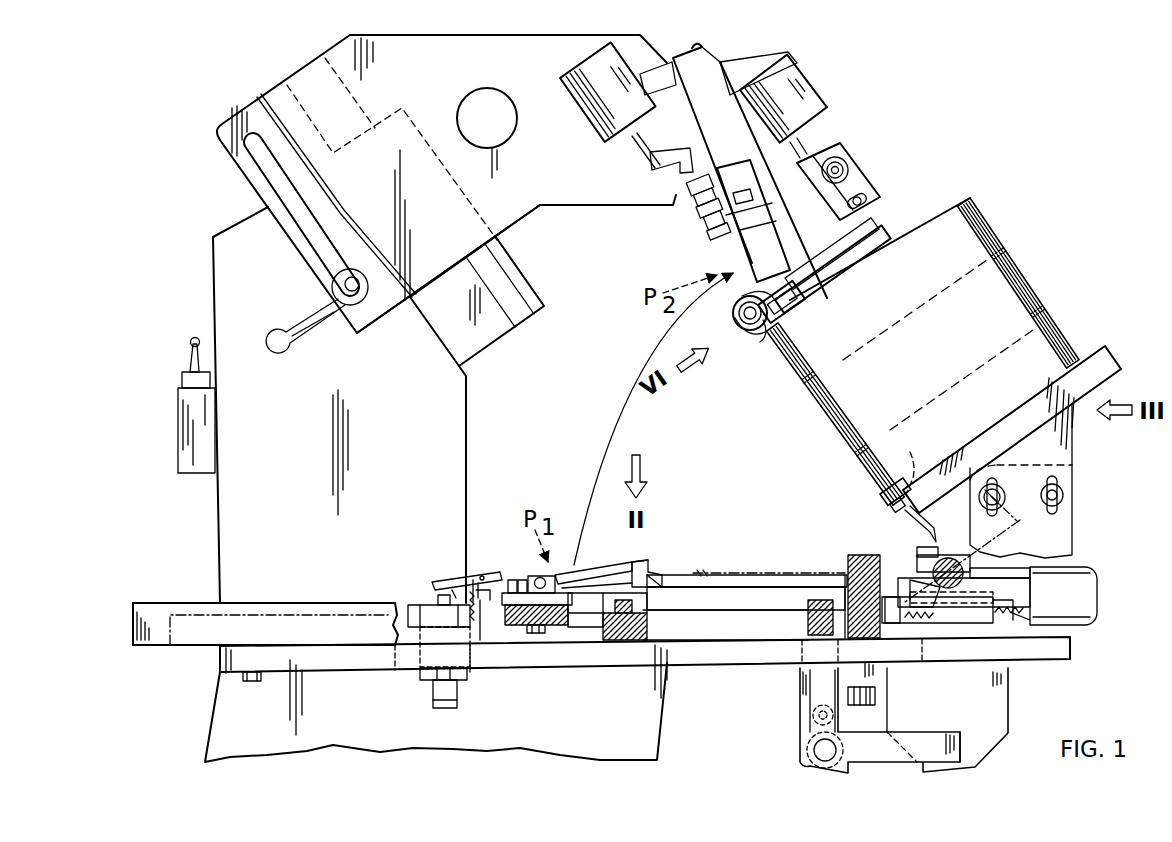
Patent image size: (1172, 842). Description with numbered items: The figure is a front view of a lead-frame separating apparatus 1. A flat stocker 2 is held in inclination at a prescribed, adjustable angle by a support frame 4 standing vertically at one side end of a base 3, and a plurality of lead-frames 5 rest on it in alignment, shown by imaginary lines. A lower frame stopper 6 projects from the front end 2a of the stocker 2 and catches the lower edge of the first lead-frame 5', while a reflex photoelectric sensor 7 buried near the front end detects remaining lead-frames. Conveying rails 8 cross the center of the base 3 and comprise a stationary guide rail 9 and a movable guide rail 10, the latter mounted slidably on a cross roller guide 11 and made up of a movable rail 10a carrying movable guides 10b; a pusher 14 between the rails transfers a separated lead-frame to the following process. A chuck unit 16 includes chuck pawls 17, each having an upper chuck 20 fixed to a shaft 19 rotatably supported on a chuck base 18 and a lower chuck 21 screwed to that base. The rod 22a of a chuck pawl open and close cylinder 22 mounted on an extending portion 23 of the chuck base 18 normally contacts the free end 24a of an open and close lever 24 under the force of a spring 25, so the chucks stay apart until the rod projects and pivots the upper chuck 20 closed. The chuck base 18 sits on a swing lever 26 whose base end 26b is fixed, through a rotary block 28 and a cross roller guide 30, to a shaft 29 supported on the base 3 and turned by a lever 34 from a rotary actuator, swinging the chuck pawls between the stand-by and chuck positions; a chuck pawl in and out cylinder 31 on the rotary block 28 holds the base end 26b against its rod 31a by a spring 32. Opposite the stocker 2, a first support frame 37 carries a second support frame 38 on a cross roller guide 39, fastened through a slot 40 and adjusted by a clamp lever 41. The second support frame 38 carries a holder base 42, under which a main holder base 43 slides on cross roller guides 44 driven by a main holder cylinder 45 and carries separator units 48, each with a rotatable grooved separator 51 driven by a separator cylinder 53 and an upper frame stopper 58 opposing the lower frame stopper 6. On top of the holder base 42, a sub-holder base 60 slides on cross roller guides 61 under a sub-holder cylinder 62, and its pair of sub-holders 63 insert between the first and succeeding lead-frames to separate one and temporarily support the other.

The lead-frame separating apparatus 1 is at (945, 101).
The stocker 2 is at (1112, 358).
The front end of the stocker 2a is at (906, 512).
The base 3 is at (732, 653).
The support frame 4 is at (1075, 476).
The lead-frame 5 is at (887, 387).
The first lead-frame 5' is at (836, 414).
The lower frame stopper 6 is at (880, 496).
The reflex photoelectric sensor 7 is at (908, 461).
The conveying rails 8 is at (760, 553).
The stationary guide rail 9 is at (855, 558).
The movable guide rail 10 is at (670, 624).
The movable rail 10a is at (652, 625).
The movable guides 10b is at (645, 558).
The cross roller guide 11 is at (280, 640).
The pusher 14 is at (806, 617).
The chuck unit 16 is at (621, 556).
The chuck pawl 17 is at (596, 566).
The chuck base 18 is at (553, 624).
The shaft 19 is at (535, 567).
The upper chuck 20 is at (567, 569).
The lower chuck 21 is at (590, 590).
The chuck pawl open and close cylinder 22 is at (422, 633).
The rod 22a is at (433, 598).
The extending portion 23 is at (428, 605).
The open and close lever 24 is at (484, 571).
The free end 24a is at (455, 592).
The spring 25 is at (487, 612).
The swing lever 26 is at (767, 593).
The base end of the swing lever 26b is at (958, 624).
The rotary block 28 is at (1035, 572).
The shaft 29 is at (930, 575).
The cross roller guide 30 is at (953, 598).
The chuck pawl in and out cylinder 31 is at (1013, 605).
The rod 31a is at (1053, 622).
The spring 32 is at (1005, 624).
The lever 34 is at (1050, 535).
The first support frame 37 is at (223, 512).
The second support frame 38 is at (533, 207).
The cross roller guide 39 is at (388, 297).
The slot 40 is at (305, 232).
The clamp lever 41 is at (313, 318).
The holder base 42 is at (690, 62).
The main holder base 43 is at (752, 282).
The cross roller guides 44 is at (742, 257).
The main holder cylinder 45 is at (590, 112).
The separator unit 48 is at (731, 327).
The separator 51 is at (758, 335).
The separator cylinder 53 is at (693, 195).
The upper frame stopper 58 is at (802, 302).
The sub-holder base 60 is at (820, 197).
The cross roller guides 61 is at (847, 223).
The sub-holder cylinder 62 is at (812, 90).
The sub-holders 63 is at (848, 247).